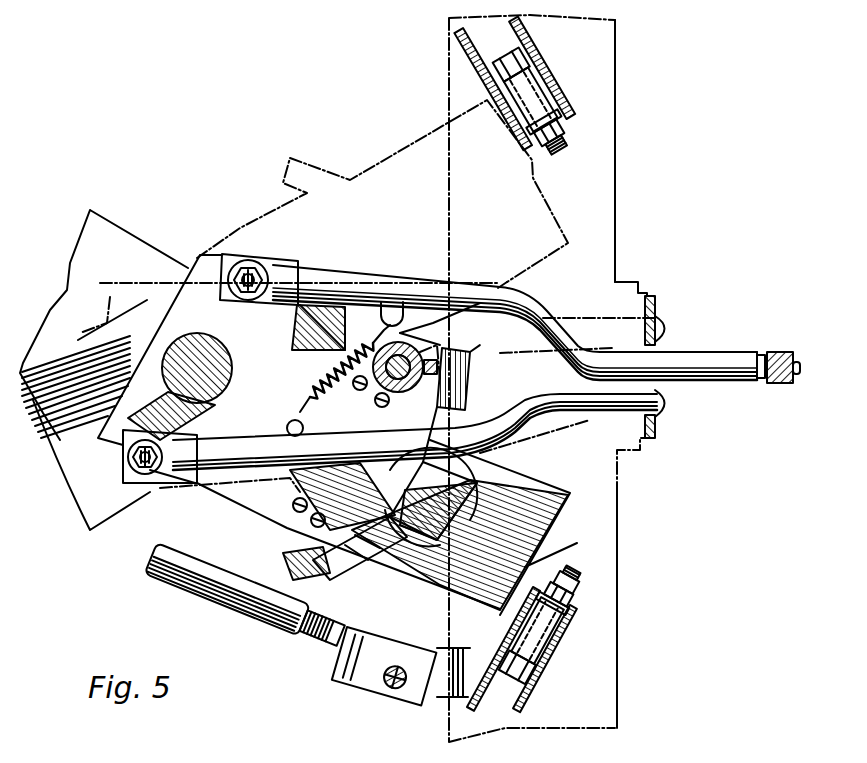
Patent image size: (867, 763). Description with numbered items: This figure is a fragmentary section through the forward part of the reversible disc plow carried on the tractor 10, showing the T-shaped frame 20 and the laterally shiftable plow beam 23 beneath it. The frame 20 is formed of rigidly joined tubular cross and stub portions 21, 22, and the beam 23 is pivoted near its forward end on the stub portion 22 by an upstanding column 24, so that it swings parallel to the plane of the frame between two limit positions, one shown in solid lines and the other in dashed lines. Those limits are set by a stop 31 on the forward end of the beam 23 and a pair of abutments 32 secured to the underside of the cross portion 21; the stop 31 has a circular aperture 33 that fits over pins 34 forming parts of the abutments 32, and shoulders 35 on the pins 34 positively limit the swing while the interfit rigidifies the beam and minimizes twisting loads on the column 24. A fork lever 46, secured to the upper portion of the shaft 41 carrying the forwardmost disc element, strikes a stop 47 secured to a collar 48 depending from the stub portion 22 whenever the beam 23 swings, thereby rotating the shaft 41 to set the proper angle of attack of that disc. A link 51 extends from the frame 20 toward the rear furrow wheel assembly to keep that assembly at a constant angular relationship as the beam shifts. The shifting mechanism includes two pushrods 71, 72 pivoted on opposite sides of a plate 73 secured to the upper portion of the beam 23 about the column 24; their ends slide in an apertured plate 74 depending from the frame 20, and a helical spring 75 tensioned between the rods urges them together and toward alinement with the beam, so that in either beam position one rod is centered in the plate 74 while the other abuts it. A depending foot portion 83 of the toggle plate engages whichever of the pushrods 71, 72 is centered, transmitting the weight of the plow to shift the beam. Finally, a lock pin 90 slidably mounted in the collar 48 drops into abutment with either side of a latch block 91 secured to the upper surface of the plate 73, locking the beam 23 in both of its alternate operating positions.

The tractor 10 is at (765, 762).
The T-shaped frame 20 is at (618, 80).
The cross portion 21 is at (618, 190).
The stub portion 22 is at (163, 278).
The plow beam 23 is at (103, 232).
The column 24 is at (218, 372).
The stop 31 is at (583, 133).
The abutments 32 is at (548, 82).
The circular aperture 33 is at (558, 562).
The pins 34 is at (568, 173).
The shoulders 35 is at (557, 157).
The shaft 41 is at (470, 482).
The fork lever 46 is at (307, 168).
The stop 47 is at (441, 352).
The collar 48 is at (380, 316).
The link 51 is at (210, 590).
The pushrod 71 is at (708, 353).
The pushrod 72 is at (593, 415).
The plate 73 is at (233, 500).
The apertured plate 74 is at (653, 440).
The helical spring 75 is at (302, 395).
The foot portion 83 is at (785, 352).
The lock pin 90 is at (380, 392).
The latch block 91 is at (287, 528).